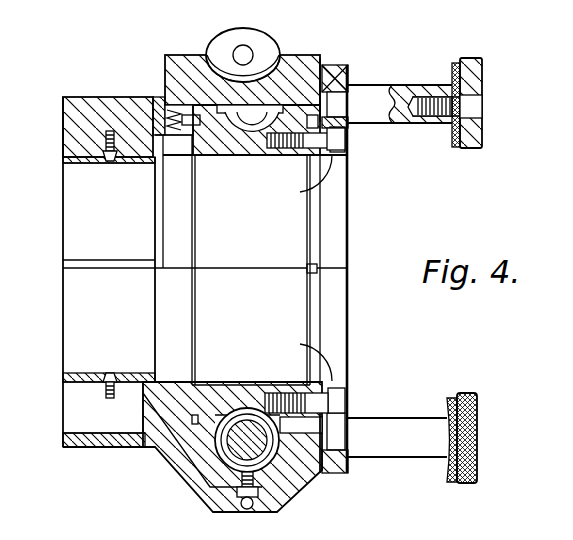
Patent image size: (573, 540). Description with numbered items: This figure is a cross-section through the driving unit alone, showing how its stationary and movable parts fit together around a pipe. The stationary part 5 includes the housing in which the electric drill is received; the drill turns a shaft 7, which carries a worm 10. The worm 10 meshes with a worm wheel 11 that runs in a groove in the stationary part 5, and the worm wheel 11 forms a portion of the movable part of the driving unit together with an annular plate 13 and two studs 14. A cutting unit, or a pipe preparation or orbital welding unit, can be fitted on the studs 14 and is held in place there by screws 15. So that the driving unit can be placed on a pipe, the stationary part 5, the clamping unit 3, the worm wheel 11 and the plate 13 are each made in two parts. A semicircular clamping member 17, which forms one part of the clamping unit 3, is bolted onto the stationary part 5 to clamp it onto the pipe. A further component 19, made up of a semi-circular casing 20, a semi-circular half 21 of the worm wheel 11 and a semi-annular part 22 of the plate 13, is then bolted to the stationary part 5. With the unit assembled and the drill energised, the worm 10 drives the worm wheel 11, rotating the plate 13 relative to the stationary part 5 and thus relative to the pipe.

The clamping unit 3 is at (95, 93).
The stationary part 5 is at (146, 450).
The shaft 7 is at (296, 487).
The worm 10 is at (225, 452).
The worm wheel 11 is at (296, 115).
The annular plate 13 is at (346, 64).
The studs 14 is at (400, 124).
The screws 15 is at (482, 78).
The semicircular clamping member 17 is at (82, 193).
The further component 19 is at (357, 164).
The semi-circular casing 20 is at (185, 67).
The semi-circular half of the worm wheel 21 is at (213, 156).
The semi-annular part of the plate 22 is at (333, 158).